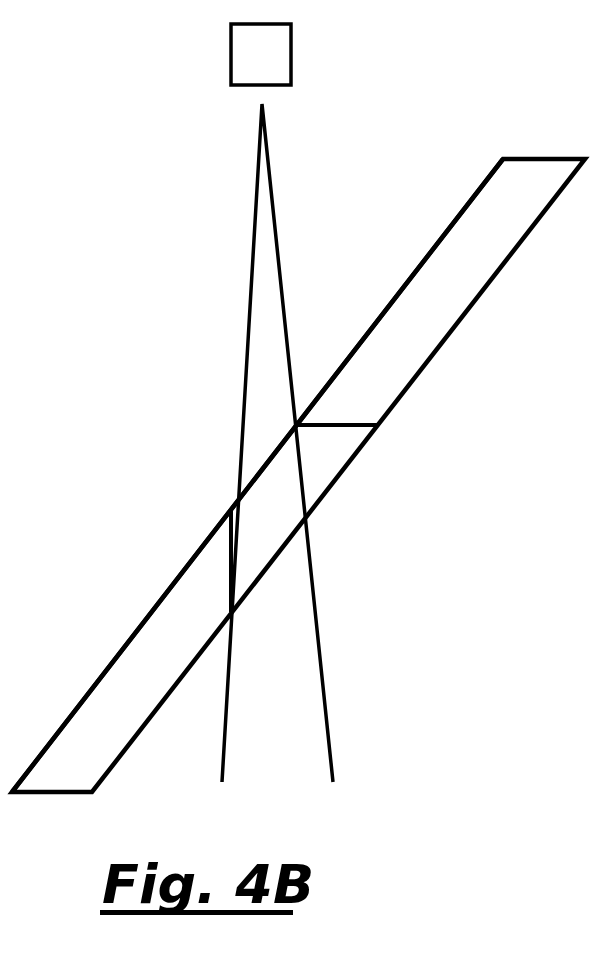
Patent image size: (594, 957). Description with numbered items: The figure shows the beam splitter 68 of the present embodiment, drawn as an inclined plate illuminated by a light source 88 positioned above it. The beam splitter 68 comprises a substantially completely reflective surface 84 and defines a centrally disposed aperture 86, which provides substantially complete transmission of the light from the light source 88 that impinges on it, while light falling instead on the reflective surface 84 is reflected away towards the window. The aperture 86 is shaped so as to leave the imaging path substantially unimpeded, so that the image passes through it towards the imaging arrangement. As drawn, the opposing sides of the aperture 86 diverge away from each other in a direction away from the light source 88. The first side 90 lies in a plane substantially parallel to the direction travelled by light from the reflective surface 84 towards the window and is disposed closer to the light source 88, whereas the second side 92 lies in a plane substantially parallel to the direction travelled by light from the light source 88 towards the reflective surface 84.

The beam splitter 68 is at (548, 173).
The reflective surface 84 is at (386, 308).
The aperture 86 is at (327, 445).
The light source 88 is at (270, 60).
The first side 90 is at (357, 424).
The second side 92 is at (229, 551).